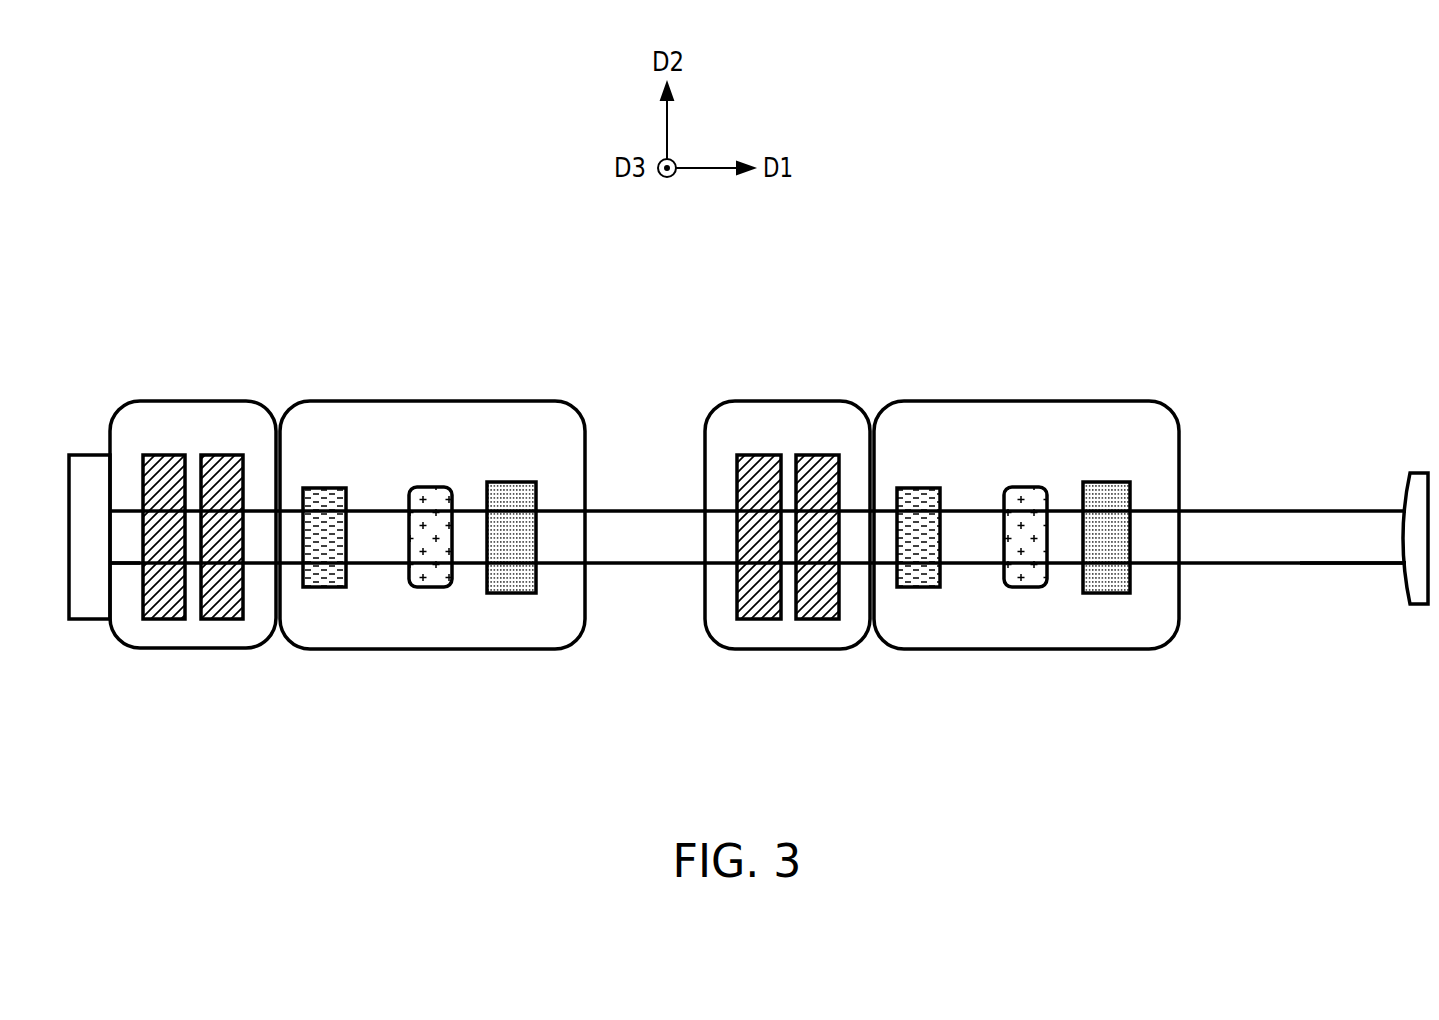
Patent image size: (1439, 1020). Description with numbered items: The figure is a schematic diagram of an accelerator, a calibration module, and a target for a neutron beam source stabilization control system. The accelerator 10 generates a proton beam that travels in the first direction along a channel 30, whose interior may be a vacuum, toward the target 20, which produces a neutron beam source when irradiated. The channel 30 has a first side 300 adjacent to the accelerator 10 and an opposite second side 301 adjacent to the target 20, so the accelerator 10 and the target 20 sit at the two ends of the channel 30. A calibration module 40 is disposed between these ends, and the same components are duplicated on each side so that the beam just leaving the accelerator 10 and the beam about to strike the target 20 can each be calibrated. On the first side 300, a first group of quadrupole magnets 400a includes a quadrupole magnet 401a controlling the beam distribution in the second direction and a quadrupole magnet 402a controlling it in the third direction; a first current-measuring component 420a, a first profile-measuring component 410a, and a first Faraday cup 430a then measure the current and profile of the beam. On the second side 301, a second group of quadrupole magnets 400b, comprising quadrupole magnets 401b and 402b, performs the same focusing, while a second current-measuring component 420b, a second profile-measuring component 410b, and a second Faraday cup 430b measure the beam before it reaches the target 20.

The accelerator 10 is at (92, 455).
The target 20 is at (1420, 470).
The channel 30 is at (1268, 530).
The first side 300 is at (118, 578).
The second side 301 is at (1386, 566).
The calibration module 40 is at (500, 290).
The first group of quadrupole magnets 400a is at (193, 398).
The quadrupole magnet 401a is at (161, 455).
The quadrupole magnet 402a is at (221, 455).
The first current-measuring component 420a is at (324, 488).
The first profile-measuring component 410a is at (431, 487).
The first Faraday cup 430a is at (512, 482).
The second group of quadrupole magnets 400b is at (787, 398).
The quadrupole magnet 401b is at (756, 455).
The quadrupole magnet 402b is at (817, 455).
The second current-measuring component 420b is at (918, 488).
The second profile-measuring component 410b is at (1025, 487).
The second Faraday cup 430b is at (1106, 482).